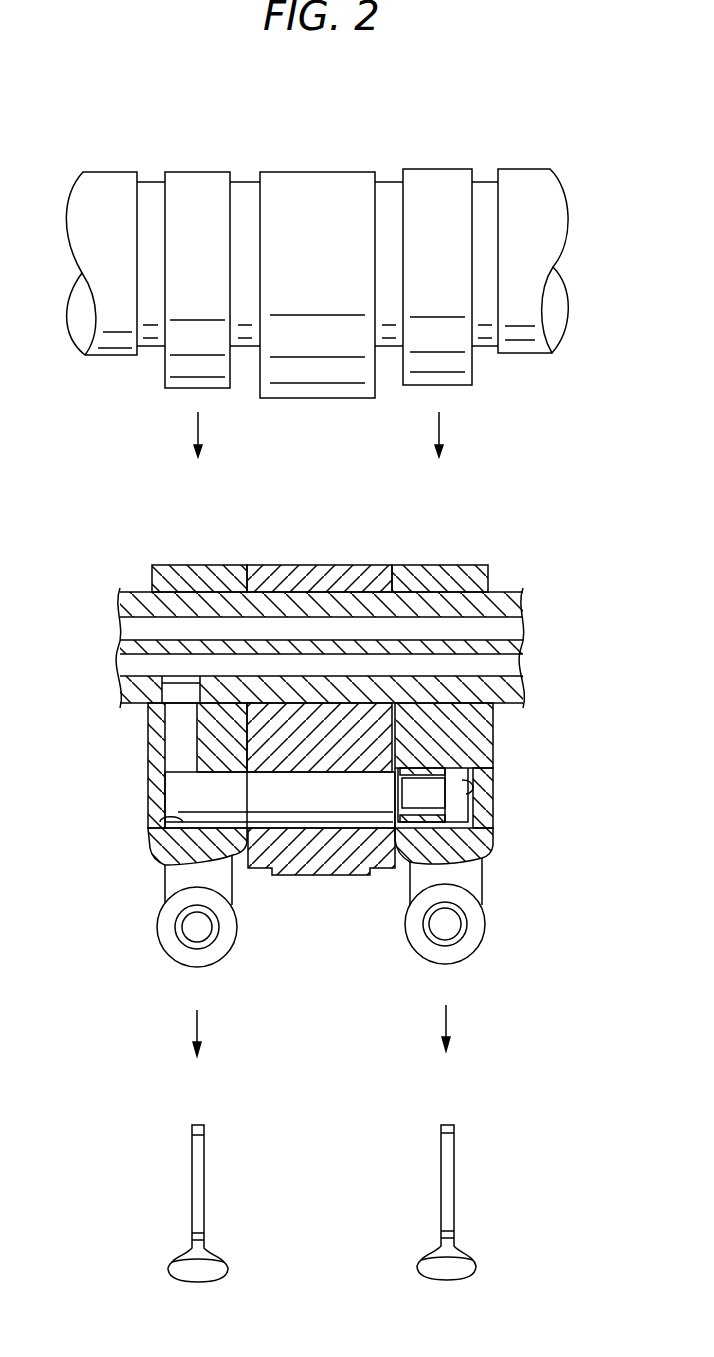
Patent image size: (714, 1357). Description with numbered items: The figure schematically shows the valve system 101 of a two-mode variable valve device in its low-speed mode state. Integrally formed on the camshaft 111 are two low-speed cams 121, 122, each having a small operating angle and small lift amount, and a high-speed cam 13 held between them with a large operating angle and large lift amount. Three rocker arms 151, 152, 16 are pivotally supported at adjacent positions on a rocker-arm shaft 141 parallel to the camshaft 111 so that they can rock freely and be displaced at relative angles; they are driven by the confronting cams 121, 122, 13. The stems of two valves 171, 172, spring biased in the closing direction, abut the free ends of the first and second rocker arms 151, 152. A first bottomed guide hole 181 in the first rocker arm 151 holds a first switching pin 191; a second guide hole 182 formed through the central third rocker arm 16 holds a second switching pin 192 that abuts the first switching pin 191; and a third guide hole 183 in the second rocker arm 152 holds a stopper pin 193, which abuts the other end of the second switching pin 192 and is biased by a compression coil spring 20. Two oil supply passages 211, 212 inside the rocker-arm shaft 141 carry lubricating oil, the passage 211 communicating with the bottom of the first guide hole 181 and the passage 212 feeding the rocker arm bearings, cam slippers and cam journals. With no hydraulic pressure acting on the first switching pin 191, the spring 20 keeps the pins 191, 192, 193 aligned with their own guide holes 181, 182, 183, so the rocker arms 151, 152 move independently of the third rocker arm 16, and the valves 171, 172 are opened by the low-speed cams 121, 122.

The valve system 101 is at (559, 411).
The camshaft 111 is at (527, 169).
The low-speed cam 121 is at (200, 178).
The low-speed cam 122 is at (431, 169).
The high-speed cam 13 is at (310, 171).
The rocker-arm shaft 141 is at (503, 595).
The first rocker arm 151 is at (200, 567).
The second rocker arm 152 is at (434, 565).
The third rocker arm 16 is at (314, 565).
The valve 171 is at (197, 1173).
The valve 172 is at (449, 1168).
The first bottomed guide hole 181 is at (183, 822).
The second guide hole 182 is at (278, 833).
The third guide hole 183 is at (487, 848).
The first switching pin 191 is at (175, 793).
The second switching pin 192 is at (345, 872).
The stopper pin 193 is at (437, 768).
The compression coil spring 20 is at (398, 788).
The oil supply passage 211 is at (131, 672).
The oil supply passage 212 is at (131, 624).